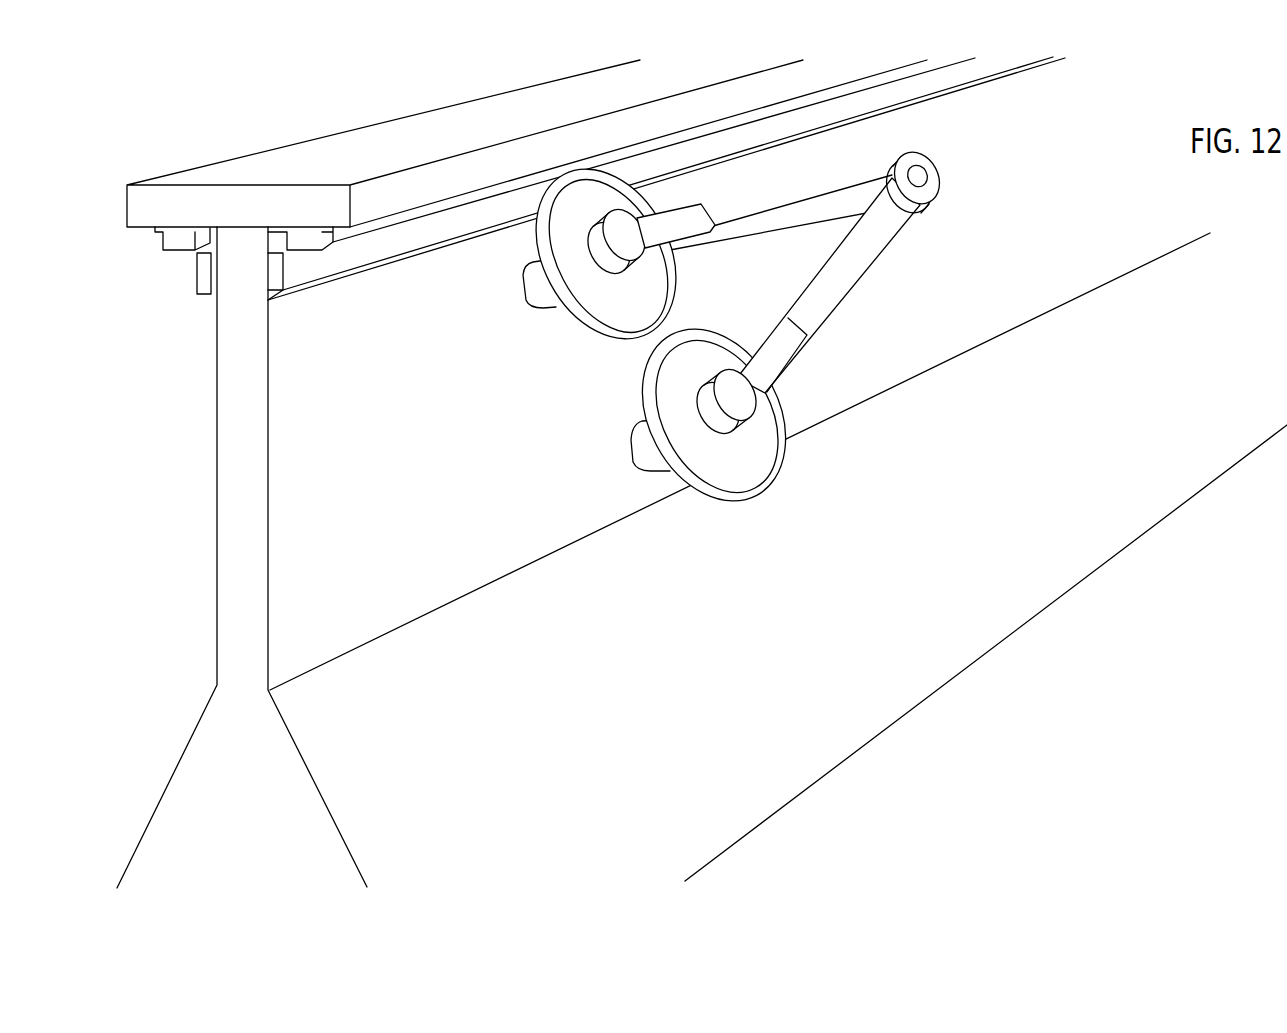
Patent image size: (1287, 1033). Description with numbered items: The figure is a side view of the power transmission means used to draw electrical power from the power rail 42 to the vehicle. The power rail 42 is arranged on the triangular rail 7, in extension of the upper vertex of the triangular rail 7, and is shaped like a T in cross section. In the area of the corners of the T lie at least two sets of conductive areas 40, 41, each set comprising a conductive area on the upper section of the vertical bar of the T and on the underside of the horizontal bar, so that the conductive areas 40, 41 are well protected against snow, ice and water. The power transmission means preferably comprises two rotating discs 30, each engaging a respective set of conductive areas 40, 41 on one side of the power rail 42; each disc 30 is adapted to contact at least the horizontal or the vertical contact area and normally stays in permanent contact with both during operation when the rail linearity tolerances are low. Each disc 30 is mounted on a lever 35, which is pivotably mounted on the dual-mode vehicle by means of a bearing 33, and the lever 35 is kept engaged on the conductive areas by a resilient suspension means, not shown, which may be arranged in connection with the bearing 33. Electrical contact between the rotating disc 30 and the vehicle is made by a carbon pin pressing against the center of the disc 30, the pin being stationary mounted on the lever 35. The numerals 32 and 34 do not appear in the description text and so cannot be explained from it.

The triangular rail 7 is at (249, 823).
The rotating disc 30 is at (751, 502).
The pulley shaft boss 32 is at (630, 450).
The bearing 33 is at (924, 157).
The pivot block 34 is at (768, 363).
The lever 35 is at (850, 286).
The conductive area 40 is at (283, 270).
The conductive area 41 is at (165, 252).
The power rail 42 is at (302, 158).